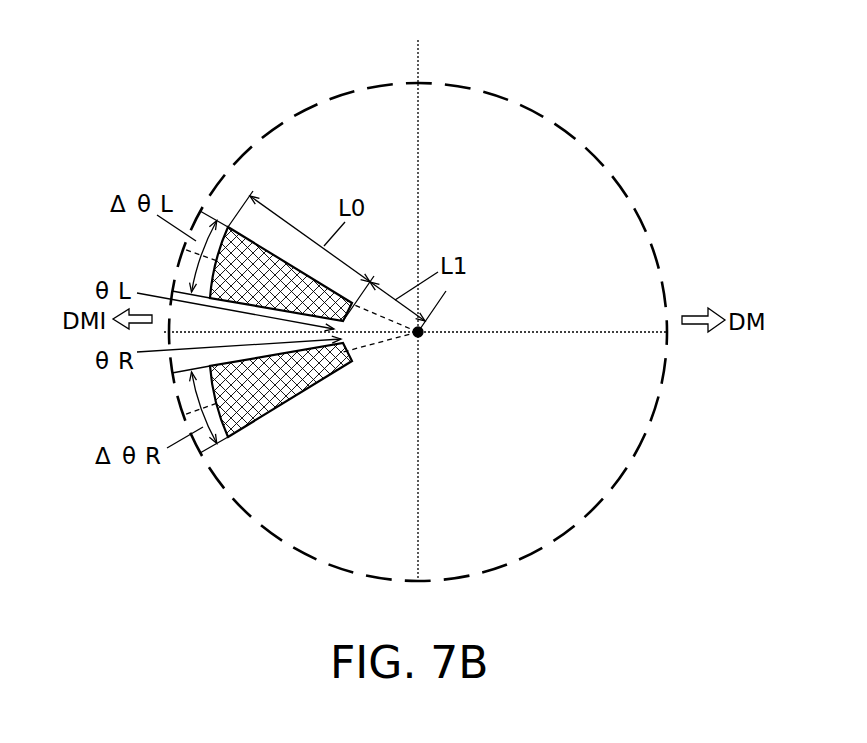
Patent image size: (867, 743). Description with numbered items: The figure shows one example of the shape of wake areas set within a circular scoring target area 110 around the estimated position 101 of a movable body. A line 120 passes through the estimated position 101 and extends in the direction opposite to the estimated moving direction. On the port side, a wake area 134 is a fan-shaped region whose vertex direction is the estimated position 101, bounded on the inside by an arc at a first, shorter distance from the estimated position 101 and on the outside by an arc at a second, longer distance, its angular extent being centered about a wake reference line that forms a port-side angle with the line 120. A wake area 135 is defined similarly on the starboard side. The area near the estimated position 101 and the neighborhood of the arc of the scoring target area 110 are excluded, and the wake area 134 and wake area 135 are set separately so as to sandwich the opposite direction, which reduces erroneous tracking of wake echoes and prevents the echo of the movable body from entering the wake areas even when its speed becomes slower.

The estimated position 101 is at (421, 336).
The scoring target area 110 is at (550, 148).
The line 120 is at (568, 334).
The wake area 134 is at (262, 230).
The wake area 135 is at (268, 415).